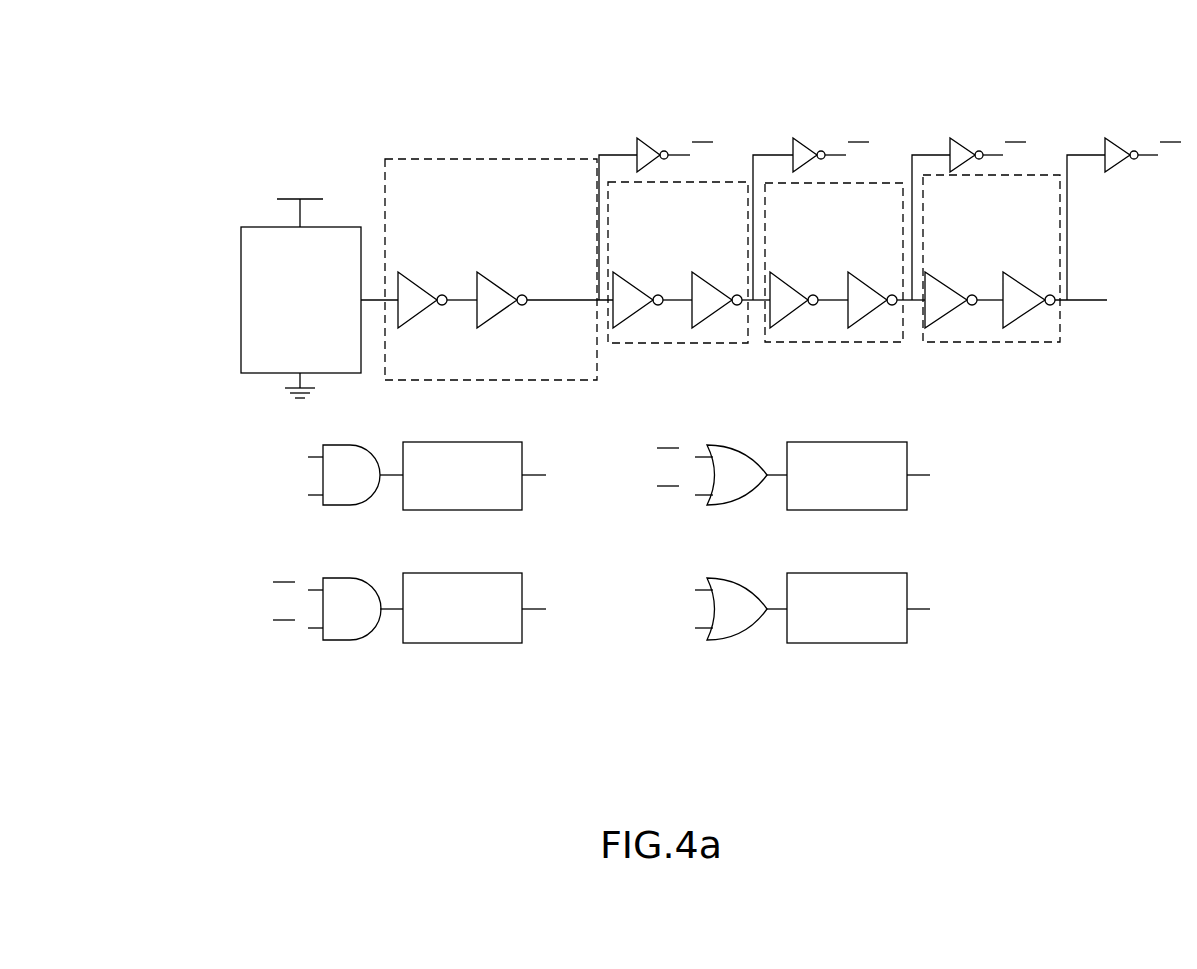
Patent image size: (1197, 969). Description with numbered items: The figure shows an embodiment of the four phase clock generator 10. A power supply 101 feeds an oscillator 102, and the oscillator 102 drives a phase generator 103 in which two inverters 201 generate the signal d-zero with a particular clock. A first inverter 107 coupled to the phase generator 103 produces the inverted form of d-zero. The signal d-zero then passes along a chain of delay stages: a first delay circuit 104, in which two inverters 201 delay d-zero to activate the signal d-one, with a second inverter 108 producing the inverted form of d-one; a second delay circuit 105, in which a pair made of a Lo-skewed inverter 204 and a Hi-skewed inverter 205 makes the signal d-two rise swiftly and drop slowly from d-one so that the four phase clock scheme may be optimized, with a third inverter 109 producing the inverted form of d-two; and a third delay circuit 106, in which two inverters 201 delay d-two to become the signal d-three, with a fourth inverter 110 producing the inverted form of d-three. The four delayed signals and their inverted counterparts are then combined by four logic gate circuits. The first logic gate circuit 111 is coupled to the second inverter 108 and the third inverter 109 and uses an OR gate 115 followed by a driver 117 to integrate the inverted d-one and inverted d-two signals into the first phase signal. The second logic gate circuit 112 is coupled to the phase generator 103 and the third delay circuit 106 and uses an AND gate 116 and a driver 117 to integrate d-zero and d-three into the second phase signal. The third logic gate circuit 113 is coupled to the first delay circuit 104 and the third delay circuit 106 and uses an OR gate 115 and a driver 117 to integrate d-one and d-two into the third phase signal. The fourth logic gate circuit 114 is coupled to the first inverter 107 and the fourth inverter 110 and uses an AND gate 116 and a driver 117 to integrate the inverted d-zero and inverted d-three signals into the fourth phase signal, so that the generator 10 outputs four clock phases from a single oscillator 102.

The four phase clock generator 10 is at (196, 63).
The power supply 101 is at (272, 172).
The oscillator 102 is at (241, 280).
The phase generator 103 is at (453, 158).
The first delay circuit 104 is at (665, 345).
The second delay circuit 105 is at (800, 345).
The third delay circuit 106 is at (953, 345).
The first inverter 107 is at (648, 140).
The second inverter 108 is at (805, 140).
The third inverter 109 is at (962, 140).
The fourth inverter 110 is at (1120, 140).
The first logic gate circuit 111 is at (962, 447).
The second logic gate circuit 112 is at (256, 438).
The third logic gate circuit 113 is at (957, 583).
The fourth logic gate circuit 114 is at (250, 579).
The OR gate 115 is at (712, 507).
The AND gate 116 is at (323, 508).
The driver 117 is at (443, 510).
The inverter 201 is at (505, 275).
The Lo-skewed inverter 204 is at (790, 275).
The Hi-skewed inverter 205 is at (848, 275).